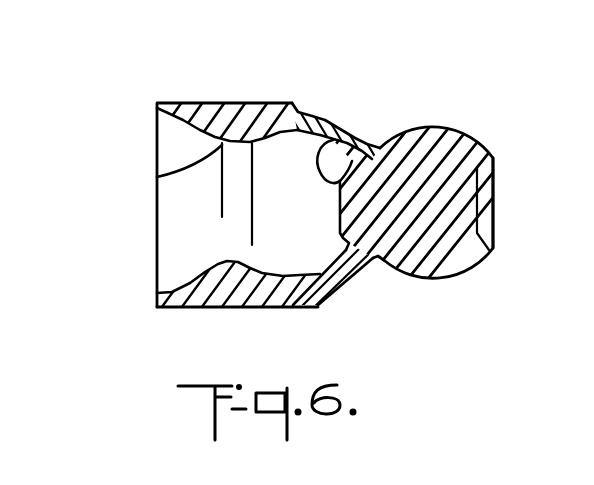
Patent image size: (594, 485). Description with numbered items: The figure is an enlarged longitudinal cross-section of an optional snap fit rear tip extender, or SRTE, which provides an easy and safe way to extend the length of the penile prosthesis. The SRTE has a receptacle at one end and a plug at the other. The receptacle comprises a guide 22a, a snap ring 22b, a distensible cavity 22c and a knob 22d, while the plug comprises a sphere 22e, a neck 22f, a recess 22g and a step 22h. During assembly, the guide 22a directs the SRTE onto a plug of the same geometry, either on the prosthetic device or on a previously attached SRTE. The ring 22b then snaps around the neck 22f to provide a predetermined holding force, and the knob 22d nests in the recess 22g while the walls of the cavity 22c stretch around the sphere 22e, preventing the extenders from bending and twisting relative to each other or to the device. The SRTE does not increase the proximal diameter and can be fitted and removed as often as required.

The guide 22a is at (157, 136).
The snap ring 22b is at (162, 176).
The distensible cavity 22c is at (324, 262).
The knob 22d is at (341, 126).
The sphere 22e is at (467, 139).
The neck 22f is at (379, 146).
The recess 22g is at (493, 192).
The step 22h is at (318, 306).